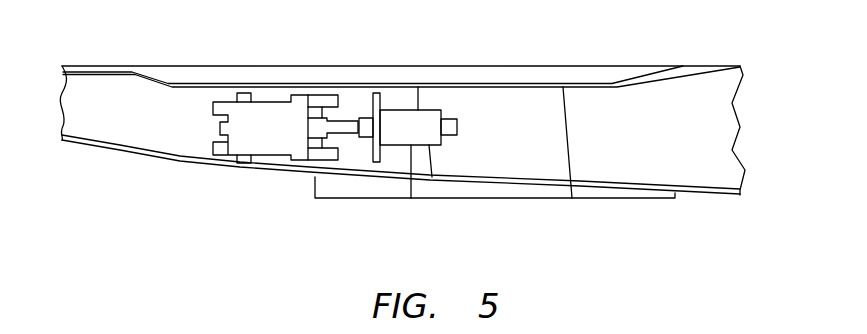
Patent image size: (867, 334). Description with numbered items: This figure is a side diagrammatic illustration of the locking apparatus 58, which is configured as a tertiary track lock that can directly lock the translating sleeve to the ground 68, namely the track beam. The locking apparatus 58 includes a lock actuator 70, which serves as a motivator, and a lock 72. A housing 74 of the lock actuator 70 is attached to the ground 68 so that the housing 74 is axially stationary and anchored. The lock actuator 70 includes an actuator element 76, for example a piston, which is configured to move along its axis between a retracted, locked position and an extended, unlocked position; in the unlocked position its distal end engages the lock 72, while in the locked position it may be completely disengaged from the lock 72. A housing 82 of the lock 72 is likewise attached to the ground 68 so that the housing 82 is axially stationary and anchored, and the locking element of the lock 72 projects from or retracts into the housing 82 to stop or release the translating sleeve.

The locking apparatus 58 is at (398, 104).
The ground 68 is at (727, 128).
The lock actuator 70 is at (396, 138).
The lock 72 is at (265, 155).
The housing 74 is at (432, 177).
The actuator element 76 is at (371, 108).
The housing 82 is at (240, 163).